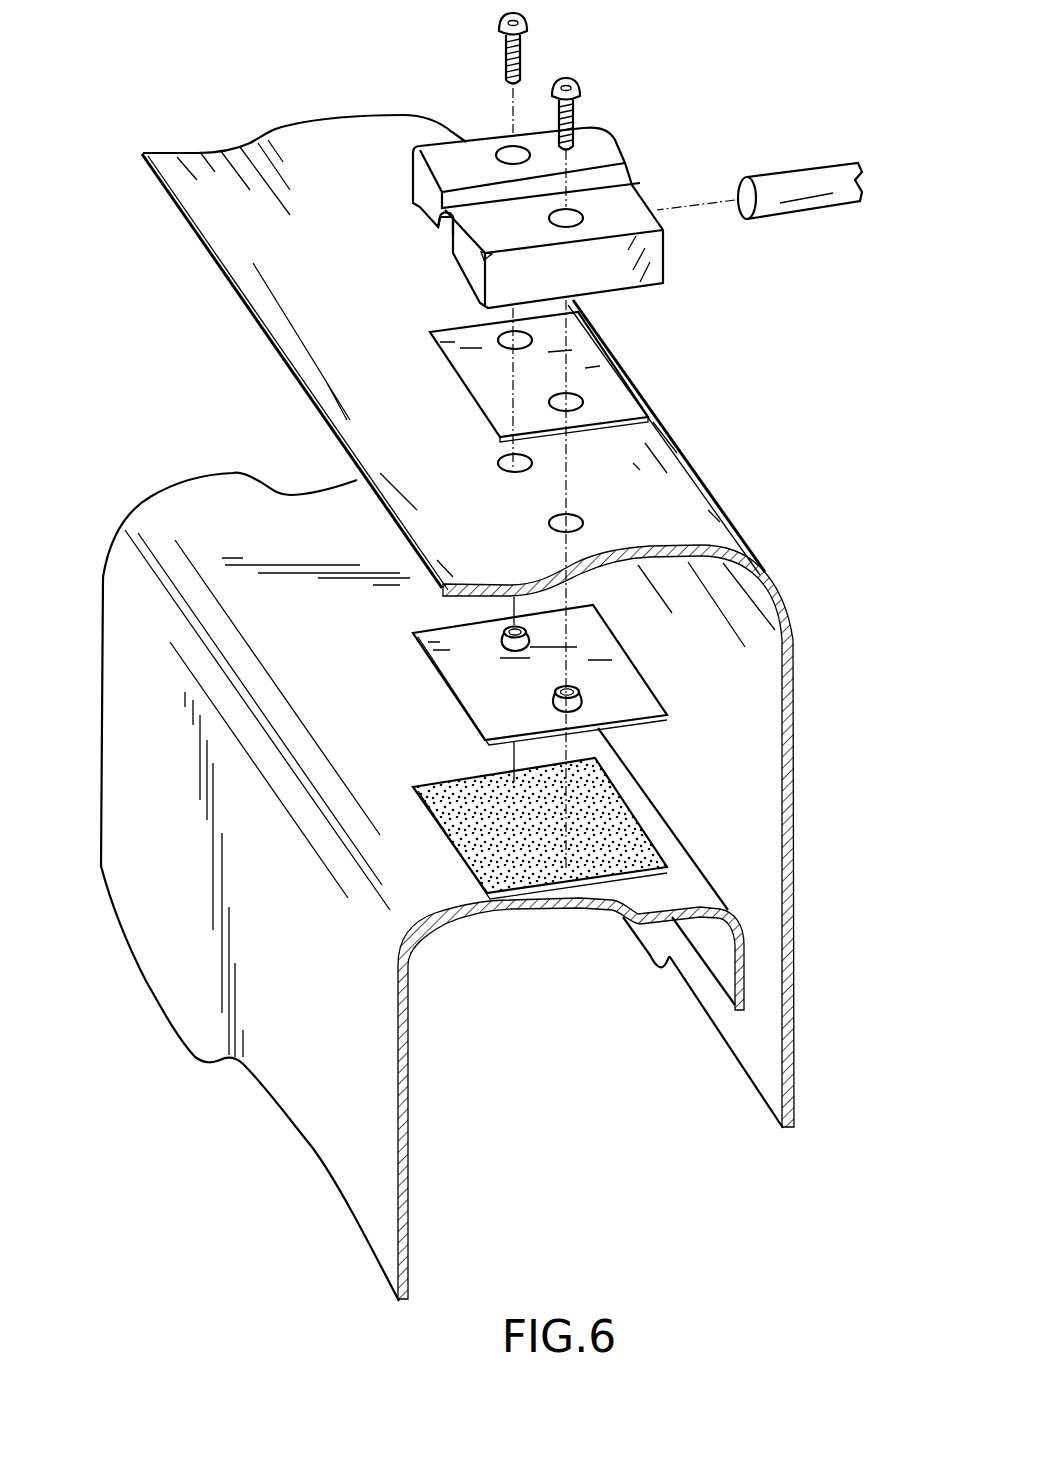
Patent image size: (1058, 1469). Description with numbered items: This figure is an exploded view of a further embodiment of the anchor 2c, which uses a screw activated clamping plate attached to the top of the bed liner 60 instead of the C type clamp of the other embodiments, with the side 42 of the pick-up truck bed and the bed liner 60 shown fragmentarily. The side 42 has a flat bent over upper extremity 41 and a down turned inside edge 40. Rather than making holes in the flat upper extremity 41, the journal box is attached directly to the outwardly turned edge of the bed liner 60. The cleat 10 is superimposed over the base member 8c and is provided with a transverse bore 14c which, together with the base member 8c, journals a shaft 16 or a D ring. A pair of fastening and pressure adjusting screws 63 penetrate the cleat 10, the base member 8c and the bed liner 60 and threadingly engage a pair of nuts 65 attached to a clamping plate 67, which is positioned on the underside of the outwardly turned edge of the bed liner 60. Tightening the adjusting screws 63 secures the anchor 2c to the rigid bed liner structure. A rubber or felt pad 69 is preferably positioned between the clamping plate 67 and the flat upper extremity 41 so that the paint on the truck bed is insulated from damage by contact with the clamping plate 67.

The anchor 2c is at (695, 360).
The base member 8c is at (630, 407).
The cleat 10 is at (630, 202).
The transverse bore 14c is at (438, 225).
The shaft 16 is at (802, 180).
The down turned inside edge 40 is at (744, 980).
The flat bent over upper extremity 41 is at (650, 902).
The side 42 is at (326, 1060).
The bed liner 60 is at (678, 493).
The fastening and pressure adjusting screws 63 is at (520, 52).
The nuts 65 is at (505, 643).
The clamping plate 67 is at (640, 698).
The pad 69 is at (633, 847).